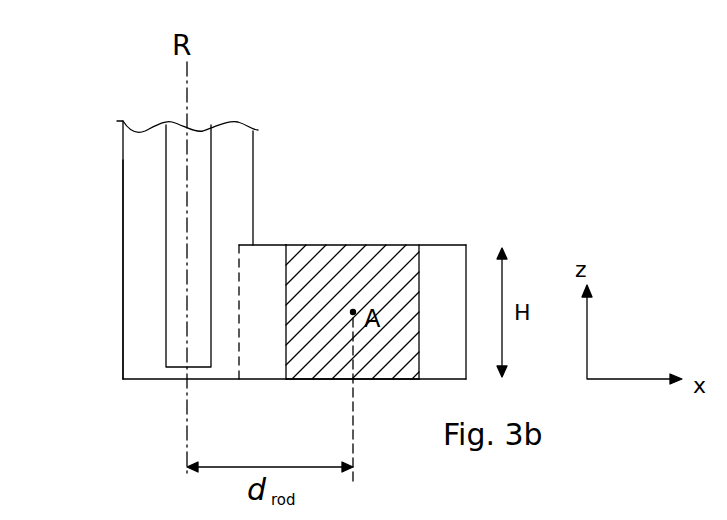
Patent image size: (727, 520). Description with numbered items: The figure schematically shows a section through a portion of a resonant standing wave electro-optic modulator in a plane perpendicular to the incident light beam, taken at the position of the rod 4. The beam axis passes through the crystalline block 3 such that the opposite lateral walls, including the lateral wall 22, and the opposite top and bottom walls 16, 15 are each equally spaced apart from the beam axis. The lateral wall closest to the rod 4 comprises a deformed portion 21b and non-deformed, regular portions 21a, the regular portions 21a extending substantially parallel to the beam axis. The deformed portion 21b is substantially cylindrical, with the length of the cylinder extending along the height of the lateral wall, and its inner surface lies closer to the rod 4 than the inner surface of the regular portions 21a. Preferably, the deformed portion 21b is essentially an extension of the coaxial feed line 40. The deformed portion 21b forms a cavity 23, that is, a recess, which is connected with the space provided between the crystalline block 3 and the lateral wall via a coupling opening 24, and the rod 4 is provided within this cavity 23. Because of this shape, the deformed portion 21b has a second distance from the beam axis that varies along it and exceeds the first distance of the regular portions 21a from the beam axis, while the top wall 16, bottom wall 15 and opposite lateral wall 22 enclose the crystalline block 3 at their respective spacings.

The coaxial feed line 40 is at (122, 162).
The rod 4 is at (202, 158).
The cavity 23 is at (138, 196).
The deformed portion 21b is at (123, 248).
The regular portions 21a is at (242, 293).
The coupling opening 24 is at (310, 206).
The top wall 16 is at (402, 243).
The lateral wall 22 is at (468, 262).
The crystalline block 3 is at (310, 352).
The bottom wall 15 is at (395, 382).